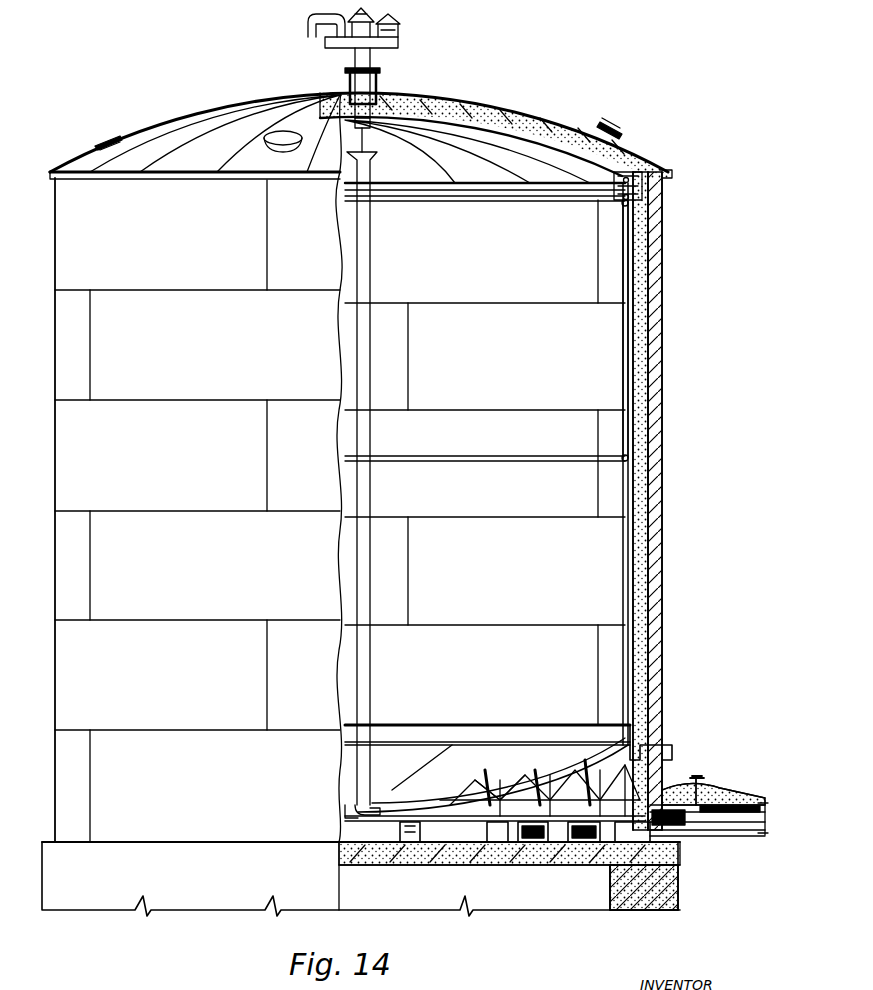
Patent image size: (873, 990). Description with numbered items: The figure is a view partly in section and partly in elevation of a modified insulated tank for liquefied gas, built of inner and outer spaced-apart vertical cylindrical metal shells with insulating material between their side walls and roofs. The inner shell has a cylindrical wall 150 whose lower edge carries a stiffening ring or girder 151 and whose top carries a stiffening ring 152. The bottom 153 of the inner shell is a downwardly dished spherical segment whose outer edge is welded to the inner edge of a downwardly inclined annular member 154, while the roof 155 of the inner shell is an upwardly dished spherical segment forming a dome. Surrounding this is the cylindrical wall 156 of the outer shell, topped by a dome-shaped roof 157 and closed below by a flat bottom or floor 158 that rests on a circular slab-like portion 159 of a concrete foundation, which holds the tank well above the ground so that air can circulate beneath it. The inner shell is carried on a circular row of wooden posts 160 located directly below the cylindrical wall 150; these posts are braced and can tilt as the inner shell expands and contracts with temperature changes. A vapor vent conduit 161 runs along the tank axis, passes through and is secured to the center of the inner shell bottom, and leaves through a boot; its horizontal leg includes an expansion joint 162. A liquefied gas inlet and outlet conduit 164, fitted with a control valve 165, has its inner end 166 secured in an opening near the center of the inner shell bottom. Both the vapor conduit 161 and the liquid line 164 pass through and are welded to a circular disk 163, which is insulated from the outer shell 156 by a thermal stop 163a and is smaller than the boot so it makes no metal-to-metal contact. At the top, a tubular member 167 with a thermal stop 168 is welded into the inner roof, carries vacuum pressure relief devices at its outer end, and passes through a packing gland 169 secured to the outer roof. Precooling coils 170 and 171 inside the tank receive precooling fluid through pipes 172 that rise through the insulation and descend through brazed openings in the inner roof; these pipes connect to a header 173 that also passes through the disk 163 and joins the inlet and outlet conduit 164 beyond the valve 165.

The cylindrical wall of the inner shell 150 is at (640, 571).
The stiffening ring or girder 151 is at (630, 744).
The stiffening ring 152 is at (635, 192).
The bottom of the inner shell 153 is at (452, 778).
The downwardly inclined annular member 154 is at (612, 746).
The roof of the inner shell 155 is at (516, 144).
The cylindrical wall of the outer tank shell 156 is at (655, 512).
The roof of the outer shell 157 is at (500, 110).
The bottom or floor of the outer shell 158 is at (356, 842).
The circular slab-like portion of concrete foundation 159 is at (496, 862).
The wooden posts 160 is at (495, 790).
The vapor vent conduit 161 is at (363, 278).
The expansion joint 162 is at (540, 840).
The circular disk 163 is at (672, 842).
The thermal stop 163a is at (676, 842).
The liquefied gas inlet and outlet conduit 164 is at (715, 842).
The control valve 165 is at (706, 796).
The inner end of inlet and outlet conduit 166 is at (354, 806).
The tubular member 167 is at (352, 60).
The thermal stop 168 is at (386, 97).
The packing gland 169 is at (380, 72).
The precooling coil 170 is at (484, 200).
The precooling coil 171 is at (470, 461).
The pipes 172 is at (648, 380).
The header 173 is at (692, 776).